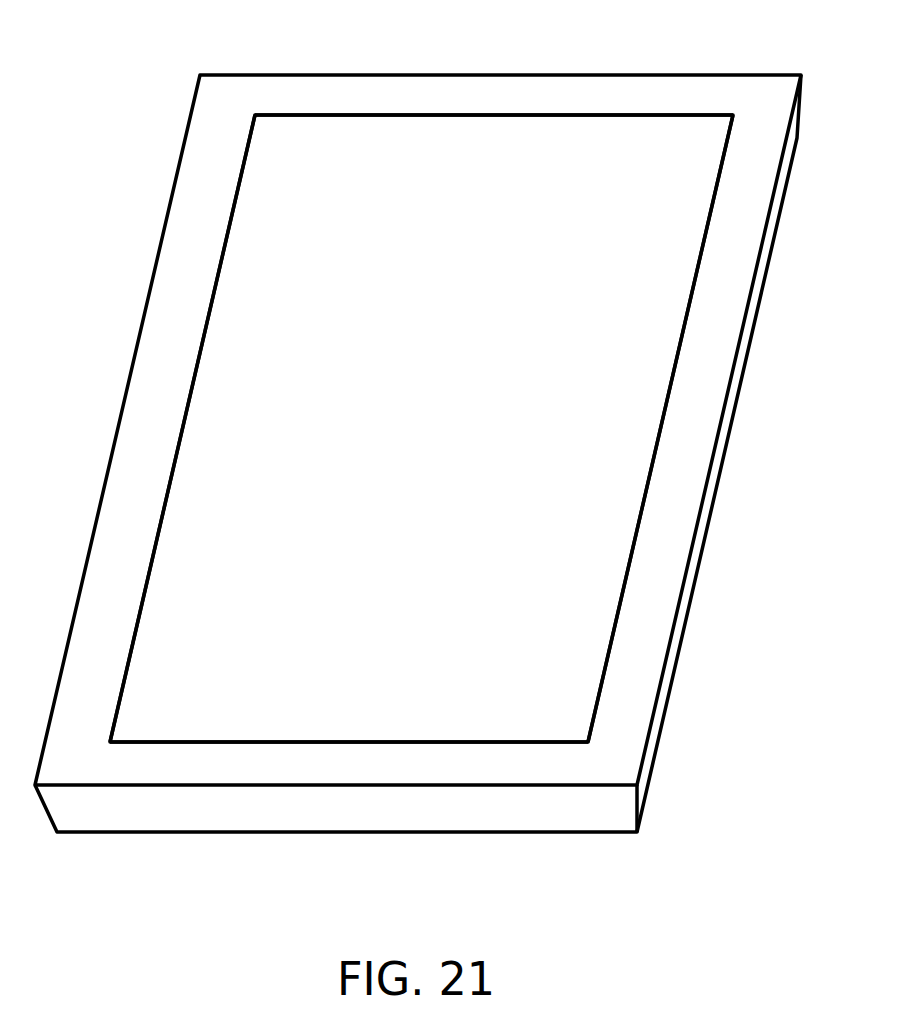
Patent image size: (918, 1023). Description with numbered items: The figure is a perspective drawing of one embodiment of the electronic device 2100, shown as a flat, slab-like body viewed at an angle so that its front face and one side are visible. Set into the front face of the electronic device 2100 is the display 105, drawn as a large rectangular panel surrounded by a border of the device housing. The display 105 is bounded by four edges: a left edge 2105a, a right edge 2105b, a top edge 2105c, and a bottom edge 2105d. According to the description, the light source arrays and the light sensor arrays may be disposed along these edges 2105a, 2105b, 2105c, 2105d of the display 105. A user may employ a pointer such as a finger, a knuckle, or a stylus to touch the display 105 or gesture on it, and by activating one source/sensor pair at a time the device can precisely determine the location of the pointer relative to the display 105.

The electronic device 2100 is at (172, 193).
The display 105 is at (443, 391).
The edge of the display 2105a is at (214, 290).
The edge of the display 2105b is at (705, 238).
The edge of the display 2105c is at (413, 116).
The edge of the display 2105d is at (377, 741).